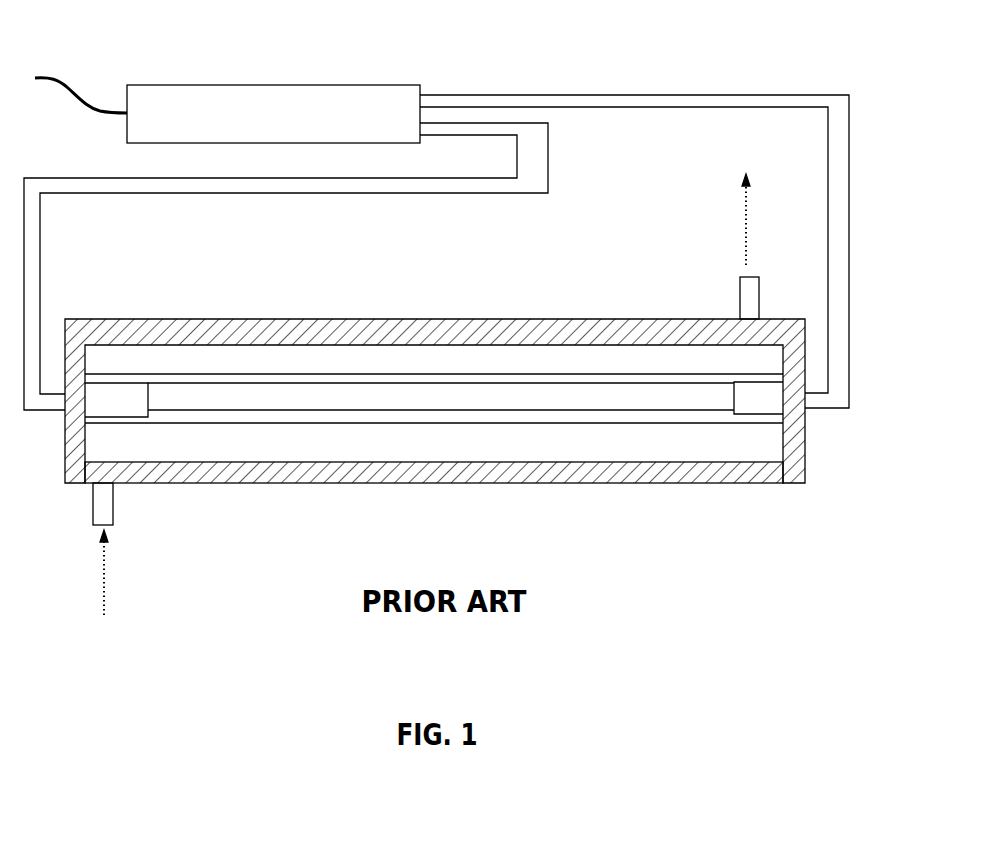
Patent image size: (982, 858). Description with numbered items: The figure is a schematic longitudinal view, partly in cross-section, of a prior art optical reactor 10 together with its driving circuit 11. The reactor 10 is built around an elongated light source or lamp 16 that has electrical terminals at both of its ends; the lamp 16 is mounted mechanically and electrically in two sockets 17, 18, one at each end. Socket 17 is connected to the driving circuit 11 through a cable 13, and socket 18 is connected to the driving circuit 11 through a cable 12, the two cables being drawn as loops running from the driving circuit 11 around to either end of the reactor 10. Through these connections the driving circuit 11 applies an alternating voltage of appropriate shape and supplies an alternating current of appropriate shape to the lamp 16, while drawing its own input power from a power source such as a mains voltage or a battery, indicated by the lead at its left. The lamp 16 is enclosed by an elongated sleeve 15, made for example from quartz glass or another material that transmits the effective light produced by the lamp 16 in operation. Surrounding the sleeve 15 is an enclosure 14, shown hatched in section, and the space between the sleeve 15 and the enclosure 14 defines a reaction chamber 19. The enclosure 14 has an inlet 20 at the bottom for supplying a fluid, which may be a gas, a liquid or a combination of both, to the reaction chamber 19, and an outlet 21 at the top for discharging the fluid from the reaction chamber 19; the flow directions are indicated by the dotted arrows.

The optical reactor 10 is at (660, 505).
The driving circuit 11 is at (190, 100).
The cable 12 is at (478, 95).
The cable 13 is at (505, 120).
The enclosure 14 is at (270, 318).
The sleeve 15 is at (355, 372).
The lamp 16 is at (432, 400).
The socket 17 is at (118, 400).
The socket 18 is at (763, 402).
The reaction chamber 19 is at (293, 452).
The inlet 20 is at (102, 503).
The outlet 21 is at (745, 293).